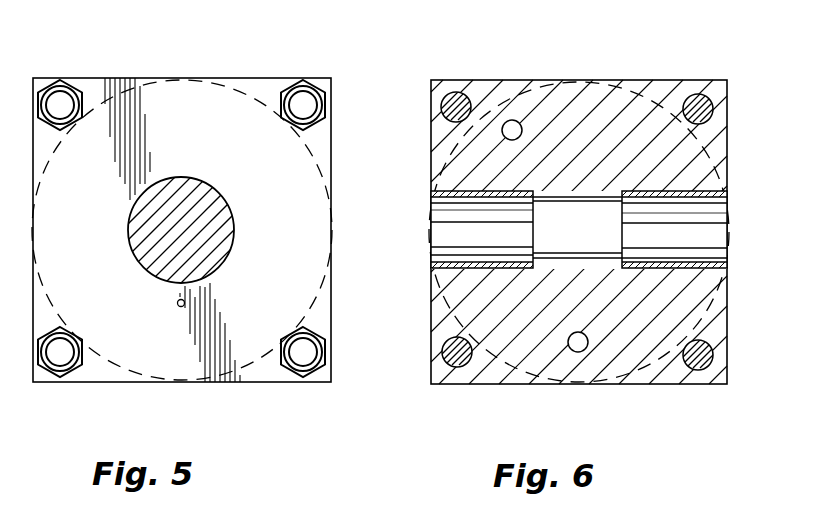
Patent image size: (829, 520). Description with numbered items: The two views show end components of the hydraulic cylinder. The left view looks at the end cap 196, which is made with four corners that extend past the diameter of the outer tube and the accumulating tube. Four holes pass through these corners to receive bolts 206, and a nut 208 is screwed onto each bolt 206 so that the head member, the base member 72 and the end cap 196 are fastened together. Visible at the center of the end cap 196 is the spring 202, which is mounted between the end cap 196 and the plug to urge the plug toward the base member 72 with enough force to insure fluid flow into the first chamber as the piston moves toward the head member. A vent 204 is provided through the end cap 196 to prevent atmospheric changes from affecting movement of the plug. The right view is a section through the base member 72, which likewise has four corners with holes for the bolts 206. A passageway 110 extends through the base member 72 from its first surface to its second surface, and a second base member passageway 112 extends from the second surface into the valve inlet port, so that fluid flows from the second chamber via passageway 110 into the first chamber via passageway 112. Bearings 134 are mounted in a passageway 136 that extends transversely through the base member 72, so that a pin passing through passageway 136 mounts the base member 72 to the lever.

In FIG. 6, the base member 72 is at (628, 74).
In FIG. 6, the passageway 110 is at (520, 120).
In FIG. 6, the second base member passageway 112 is at (573, 333).
In FIG. 6, the bearings 134 is at (440, 200).
In FIG. 6, the passageway 136 is at (575, 258).
In FIG. 5, the end cap 196 is at (320, 146).
In FIG. 5, the spring 202 is at (217, 208).
In FIG. 5, the vent 204 is at (176, 303).
In FIG. 6, the bolts 206 is at (447, 100).
In FIG. 5, the nut 208 is at (70, 82).